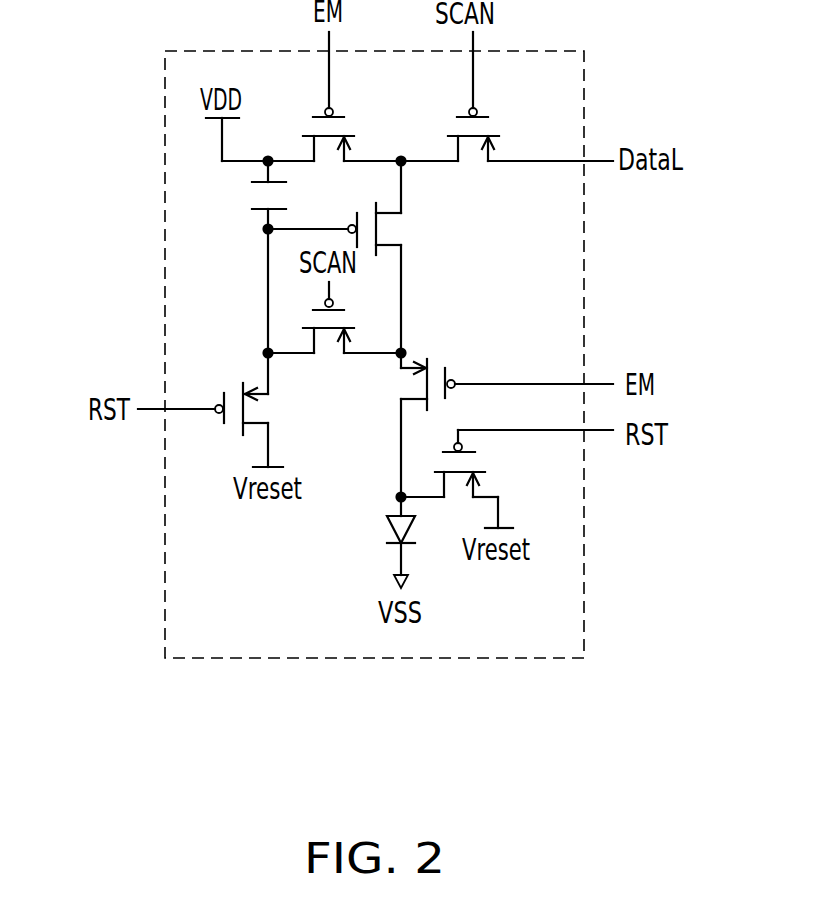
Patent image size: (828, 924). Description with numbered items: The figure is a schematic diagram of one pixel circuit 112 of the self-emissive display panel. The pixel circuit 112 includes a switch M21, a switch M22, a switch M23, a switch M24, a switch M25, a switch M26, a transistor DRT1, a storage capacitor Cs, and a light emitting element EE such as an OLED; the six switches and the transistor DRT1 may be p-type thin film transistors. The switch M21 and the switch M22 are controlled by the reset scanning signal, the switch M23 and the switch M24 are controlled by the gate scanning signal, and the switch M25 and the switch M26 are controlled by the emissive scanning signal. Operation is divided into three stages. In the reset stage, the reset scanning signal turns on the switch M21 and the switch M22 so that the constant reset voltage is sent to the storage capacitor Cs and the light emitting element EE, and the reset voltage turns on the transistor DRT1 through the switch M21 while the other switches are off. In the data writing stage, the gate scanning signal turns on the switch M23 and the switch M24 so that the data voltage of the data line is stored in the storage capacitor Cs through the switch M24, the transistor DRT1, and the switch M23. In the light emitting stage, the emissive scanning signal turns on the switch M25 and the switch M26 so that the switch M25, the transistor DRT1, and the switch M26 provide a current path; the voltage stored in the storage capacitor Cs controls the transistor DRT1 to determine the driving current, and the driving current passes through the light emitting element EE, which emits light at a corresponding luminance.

The pixel circuit 112 is at (163, 524).
The switch M21 is at (235, 388).
The switch M22 is at (468, 463).
The switch M23 is at (328, 347).
The switch M24 is at (474, 162).
The switch M25 is at (333, 127).
The switch M26 is at (437, 370).
The transistor DRT1 is at (356, 208).
The storage capacitor Cs is at (269, 186).
The light emitting element EE is at (387, 530).